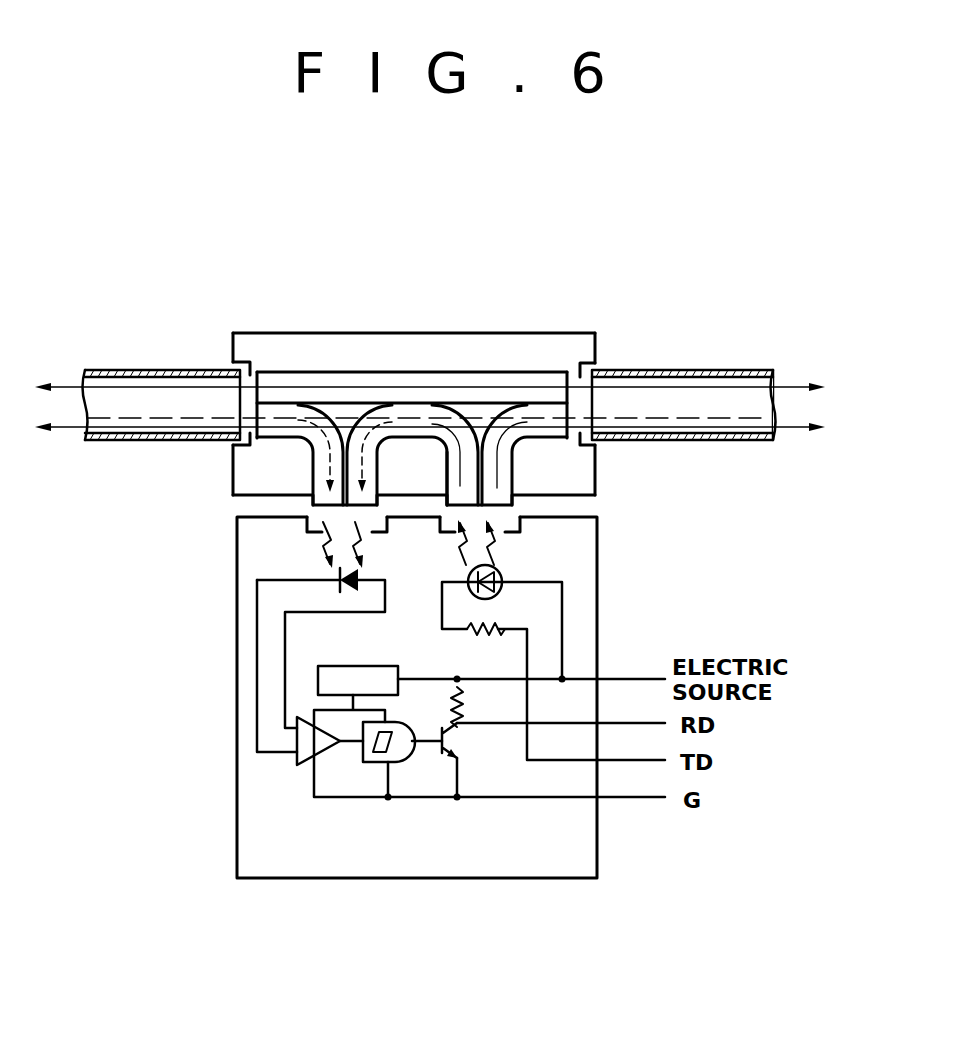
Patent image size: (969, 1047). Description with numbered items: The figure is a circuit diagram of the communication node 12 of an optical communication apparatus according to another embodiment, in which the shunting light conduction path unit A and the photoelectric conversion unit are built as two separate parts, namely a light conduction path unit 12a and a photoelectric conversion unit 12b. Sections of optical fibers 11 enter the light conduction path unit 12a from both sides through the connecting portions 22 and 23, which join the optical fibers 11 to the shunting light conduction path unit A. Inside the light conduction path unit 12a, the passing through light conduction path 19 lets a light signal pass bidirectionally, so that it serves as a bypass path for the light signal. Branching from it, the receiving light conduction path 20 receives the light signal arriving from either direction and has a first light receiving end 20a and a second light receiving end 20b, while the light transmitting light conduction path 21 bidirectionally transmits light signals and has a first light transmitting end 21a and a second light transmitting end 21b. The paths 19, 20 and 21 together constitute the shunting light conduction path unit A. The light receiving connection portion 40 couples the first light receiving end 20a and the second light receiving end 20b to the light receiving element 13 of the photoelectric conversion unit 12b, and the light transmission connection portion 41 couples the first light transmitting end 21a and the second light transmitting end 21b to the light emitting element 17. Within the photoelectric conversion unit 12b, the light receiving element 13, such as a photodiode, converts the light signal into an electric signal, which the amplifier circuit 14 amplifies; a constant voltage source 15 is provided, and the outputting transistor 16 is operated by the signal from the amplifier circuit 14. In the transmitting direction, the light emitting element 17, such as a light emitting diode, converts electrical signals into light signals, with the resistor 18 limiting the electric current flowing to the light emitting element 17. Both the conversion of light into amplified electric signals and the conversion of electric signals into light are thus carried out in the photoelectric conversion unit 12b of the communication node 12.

The optical fiber 11 is at (119, 370).
The communication node 12 is at (419, 334).
The light conduction path unit 12a is at (531, 333).
The photoelectric conversion unit 12b is at (237, 720).
The light receiving element 13 is at (358, 572).
The amplifier circuit 14 is at (300, 760).
The constant voltage source 15 is at (354, 668).
The outputting transistor 16 is at (450, 740).
The light emitting element 17 is at (503, 563).
The resistor 18 is at (467, 630).
The passing through light conduction path 19 is at (360, 372).
The receiving light conduction path 20 is at (322, 410).
The first light receiving end 20a is at (320, 498).
The second light receiving end 20b is at (356, 508).
The light transmitting light conduction path 21 is at (483, 440).
The first light transmitting end 21a is at (472, 512).
The second light transmitting end 21b is at (507, 495).
The connecting portion 22 is at (243, 367).
The connecting portion 23 is at (596, 349).
The light receiving connection portion 40 is at (308, 533).
The light transmission connection portion 41 is at (515, 524).
The shunting light conduction path unit A is at (553, 365).